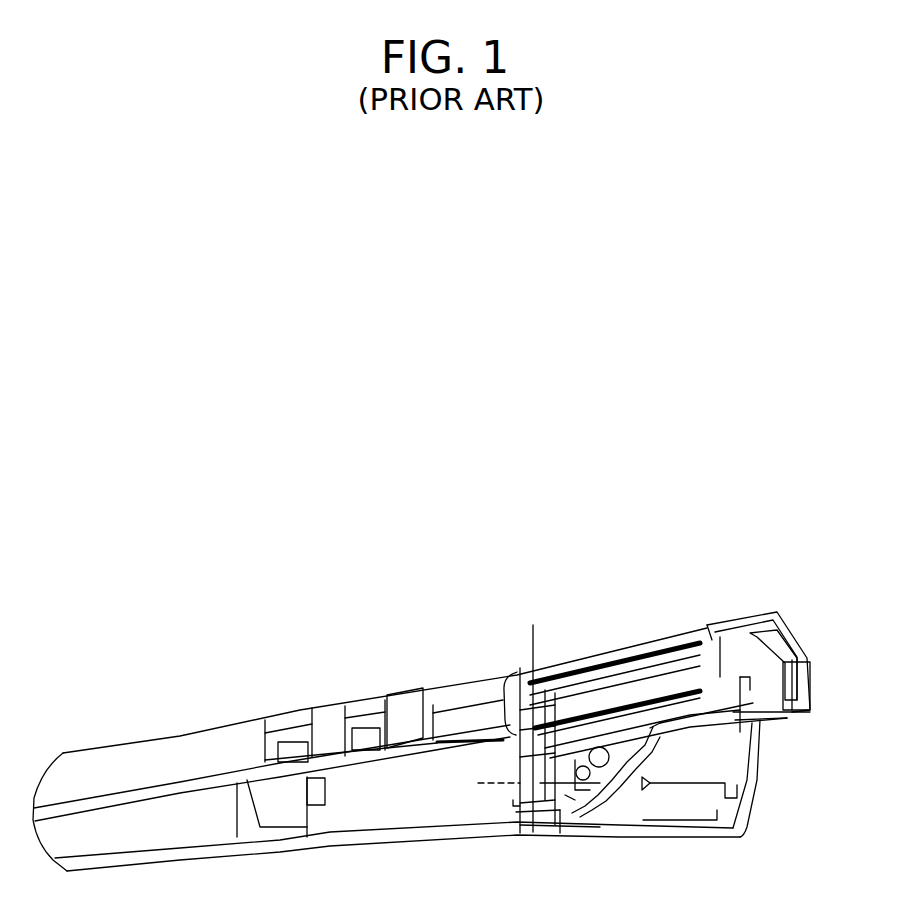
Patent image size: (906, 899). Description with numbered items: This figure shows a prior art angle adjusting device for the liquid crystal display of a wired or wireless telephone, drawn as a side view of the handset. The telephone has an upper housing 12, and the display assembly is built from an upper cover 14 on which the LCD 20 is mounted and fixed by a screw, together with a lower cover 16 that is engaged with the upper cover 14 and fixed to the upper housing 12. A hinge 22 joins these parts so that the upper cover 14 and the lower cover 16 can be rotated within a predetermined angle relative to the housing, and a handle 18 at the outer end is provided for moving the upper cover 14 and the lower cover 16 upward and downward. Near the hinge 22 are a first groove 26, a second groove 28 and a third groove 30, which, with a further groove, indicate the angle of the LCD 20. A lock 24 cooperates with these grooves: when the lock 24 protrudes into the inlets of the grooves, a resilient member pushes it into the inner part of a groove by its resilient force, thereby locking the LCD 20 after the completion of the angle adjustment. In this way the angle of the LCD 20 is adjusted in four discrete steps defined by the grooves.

The upper housing 12 is at (272, 690).
The upper cover 14 is at (777, 630).
The lower cover 16 is at (786, 720).
The handle 18 is at (810, 688).
The LCD 20 is at (625, 692).
The hinge 22 is at (555, 667).
The lock 24 is at (603, 765).
The first groove 26 is at (520, 825).
The second groove 28 is at (573, 833).
The third groove 30 is at (583, 780).